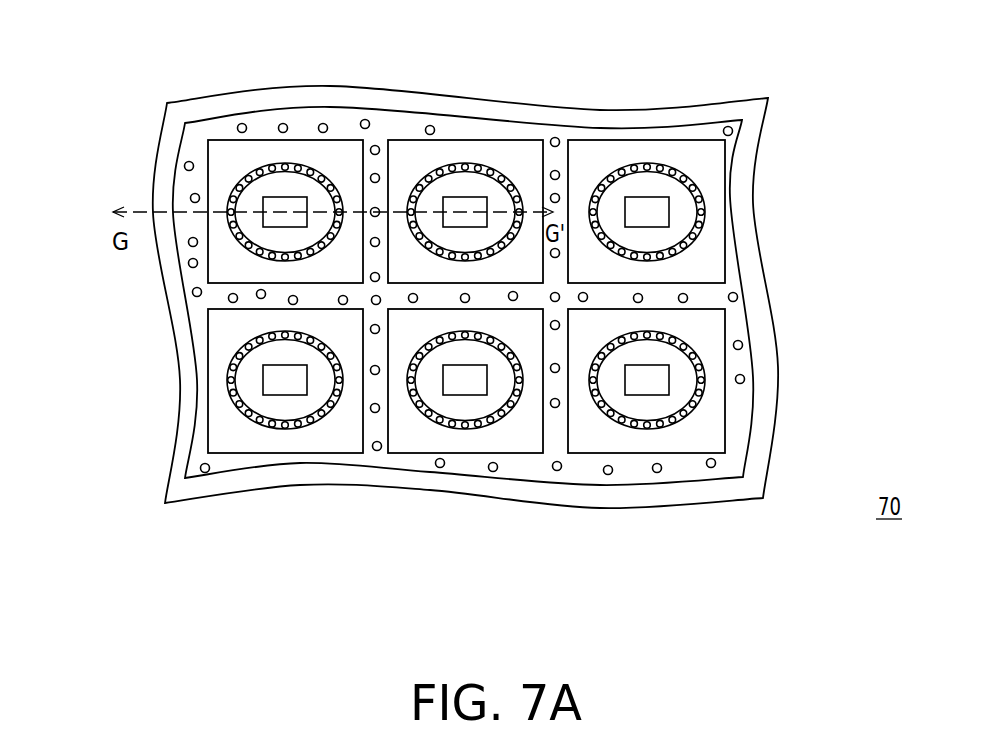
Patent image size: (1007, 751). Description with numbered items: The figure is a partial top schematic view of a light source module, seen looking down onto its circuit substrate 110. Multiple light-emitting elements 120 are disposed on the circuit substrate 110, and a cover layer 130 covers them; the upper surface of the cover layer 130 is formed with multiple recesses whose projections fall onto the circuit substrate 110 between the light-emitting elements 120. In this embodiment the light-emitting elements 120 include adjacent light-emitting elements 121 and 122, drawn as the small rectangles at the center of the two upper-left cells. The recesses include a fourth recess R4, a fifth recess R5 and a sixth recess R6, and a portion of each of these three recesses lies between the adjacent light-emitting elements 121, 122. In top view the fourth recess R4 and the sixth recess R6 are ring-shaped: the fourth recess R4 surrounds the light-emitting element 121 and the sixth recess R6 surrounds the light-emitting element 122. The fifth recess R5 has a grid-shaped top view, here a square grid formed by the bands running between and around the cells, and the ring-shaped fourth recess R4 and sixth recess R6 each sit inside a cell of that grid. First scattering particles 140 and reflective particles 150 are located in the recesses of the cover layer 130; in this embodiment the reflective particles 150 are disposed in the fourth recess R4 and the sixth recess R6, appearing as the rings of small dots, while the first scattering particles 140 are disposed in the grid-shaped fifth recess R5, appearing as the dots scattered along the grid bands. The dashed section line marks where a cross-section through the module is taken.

The circuit substrate 110 is at (762, 458).
The light-emitting elements 120 is at (83, 14).
The light-emitting element 121 is at (278, 203).
The light-emitting element 122 is at (462, 200).
The cover layer 130 is at (735, 430).
The first scattering particles 140 is at (377, 451).
The reflective particles 150 is at (453, 428).
The fourth recess R4 is at (312, 153).
The fifth recess R5 is at (388, 126).
The sixth recess R6 is at (496, 153).